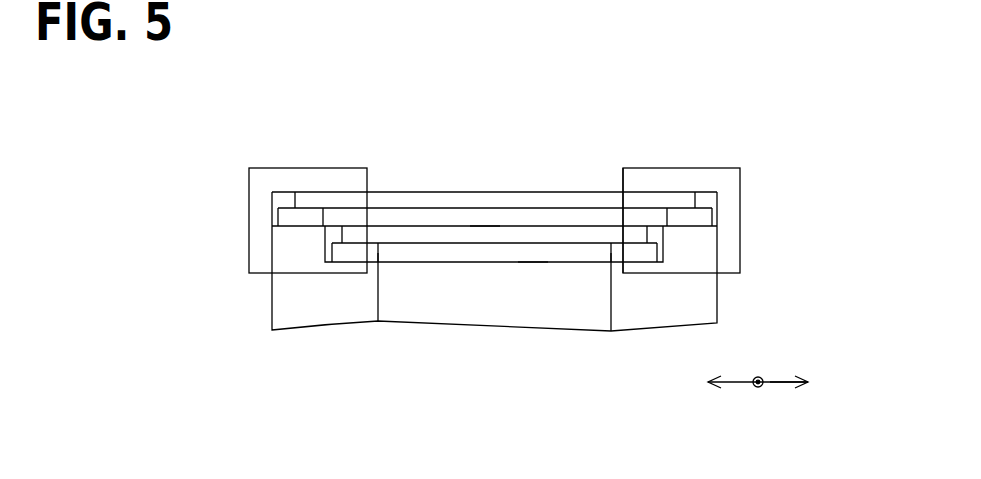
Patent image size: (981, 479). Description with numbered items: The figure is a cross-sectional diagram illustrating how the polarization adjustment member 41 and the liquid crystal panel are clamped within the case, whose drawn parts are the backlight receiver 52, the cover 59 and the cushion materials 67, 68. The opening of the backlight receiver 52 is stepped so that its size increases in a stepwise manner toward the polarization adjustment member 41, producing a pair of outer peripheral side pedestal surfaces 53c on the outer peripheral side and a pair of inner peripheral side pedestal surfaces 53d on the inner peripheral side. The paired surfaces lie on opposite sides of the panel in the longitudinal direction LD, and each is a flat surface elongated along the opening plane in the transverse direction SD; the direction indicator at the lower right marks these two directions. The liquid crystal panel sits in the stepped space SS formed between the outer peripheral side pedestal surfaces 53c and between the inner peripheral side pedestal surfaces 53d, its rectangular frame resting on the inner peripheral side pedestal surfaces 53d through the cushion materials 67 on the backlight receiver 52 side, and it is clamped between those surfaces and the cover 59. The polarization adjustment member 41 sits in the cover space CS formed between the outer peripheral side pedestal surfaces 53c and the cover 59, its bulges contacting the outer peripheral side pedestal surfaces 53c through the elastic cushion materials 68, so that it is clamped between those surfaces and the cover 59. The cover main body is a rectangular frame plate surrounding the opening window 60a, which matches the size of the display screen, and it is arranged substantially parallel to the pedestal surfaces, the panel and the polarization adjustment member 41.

The polarization adjustment member 41 is at (445, 192).
The backlight receiver 52 is at (717, 303).
The outer peripheral side pedestal surfaces 53c is at (280, 225).
The inner peripheral side pedestal surfaces 53d is at (327, 260).
The cover 59 is at (725, 168).
The opening window 60a is at (623, 181).
The cushion materials 67 is at (378, 253).
The cushion materials 68 is at (293, 207).
The cover space CS is at (485, 217).
The stepped space SS is at (533, 250).
The transverse direction SD is at (757, 388).
The longitudinal direction LD is at (780, 383).